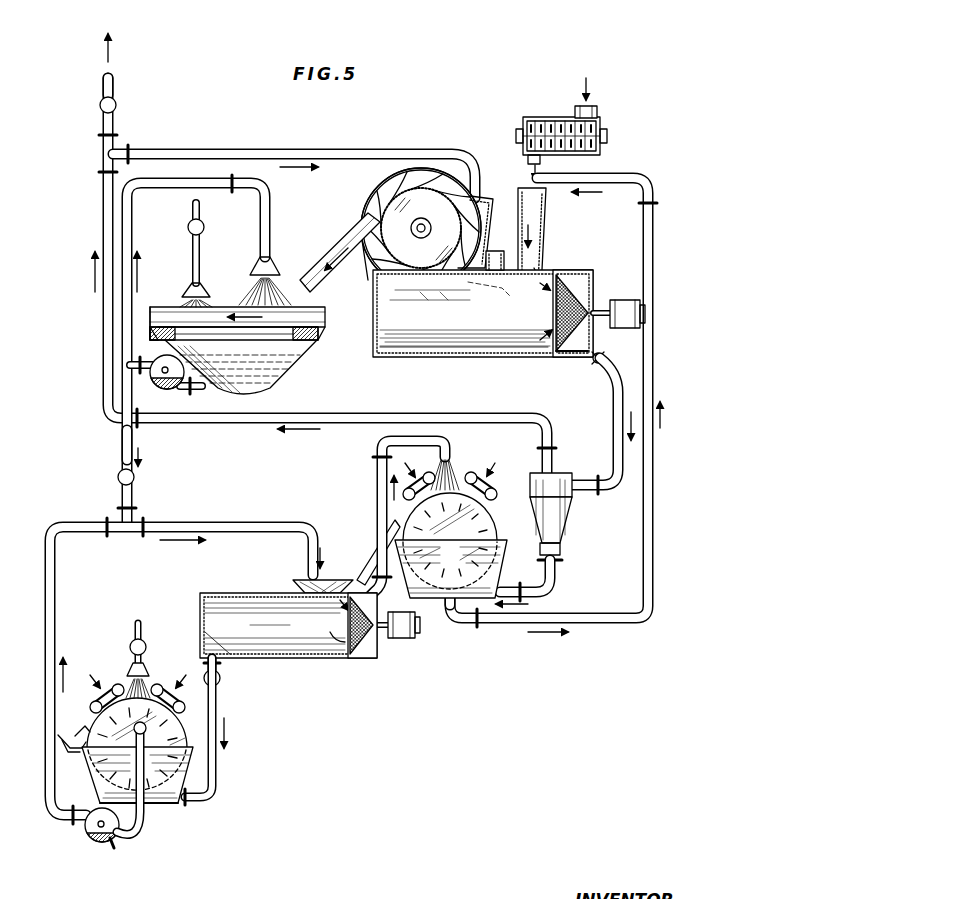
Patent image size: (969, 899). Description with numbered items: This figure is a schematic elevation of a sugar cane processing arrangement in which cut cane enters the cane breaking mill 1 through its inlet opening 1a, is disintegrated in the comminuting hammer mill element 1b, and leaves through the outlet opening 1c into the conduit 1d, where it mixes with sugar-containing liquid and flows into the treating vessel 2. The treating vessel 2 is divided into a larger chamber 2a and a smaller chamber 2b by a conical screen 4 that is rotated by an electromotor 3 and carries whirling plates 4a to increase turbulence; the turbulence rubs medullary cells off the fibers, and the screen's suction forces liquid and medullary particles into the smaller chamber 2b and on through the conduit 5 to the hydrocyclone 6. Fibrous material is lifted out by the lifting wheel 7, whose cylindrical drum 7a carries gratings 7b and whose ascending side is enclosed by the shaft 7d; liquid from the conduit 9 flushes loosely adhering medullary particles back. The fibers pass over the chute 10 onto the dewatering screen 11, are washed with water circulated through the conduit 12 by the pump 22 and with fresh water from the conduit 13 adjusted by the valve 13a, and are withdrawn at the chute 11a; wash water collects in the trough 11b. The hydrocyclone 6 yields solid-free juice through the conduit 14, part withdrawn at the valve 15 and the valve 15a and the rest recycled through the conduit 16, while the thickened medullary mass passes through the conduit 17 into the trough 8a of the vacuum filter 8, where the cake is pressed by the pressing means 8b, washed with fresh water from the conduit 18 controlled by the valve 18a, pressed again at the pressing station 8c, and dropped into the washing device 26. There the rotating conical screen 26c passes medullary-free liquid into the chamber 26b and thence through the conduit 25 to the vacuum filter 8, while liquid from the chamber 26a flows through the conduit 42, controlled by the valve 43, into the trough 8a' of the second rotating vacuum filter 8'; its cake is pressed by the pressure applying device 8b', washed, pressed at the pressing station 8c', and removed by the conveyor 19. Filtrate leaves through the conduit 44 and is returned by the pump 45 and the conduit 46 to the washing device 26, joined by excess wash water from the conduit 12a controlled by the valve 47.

The cane breaking mill 1 is at (548, 115).
The inlet opening 1a is at (598, 108).
The comminuting hammer mill element 1b is at (590, 152).
The outlet opening 1c is at (525, 150).
The conduit 1d is at (543, 225).
The treating vessel 2 is at (370, 336).
The larger chamber 2a is at (418, 350).
The smaller chamber 2b is at (575, 270).
The electromotor 3 is at (626, 300).
The conical screen 4 is at (604, 352).
The whirling plates 4a is at (560, 352).
The conduit 5 is at (612, 420).
The hydrocyclone 6 is at (562, 512).
The lifting wheel 7 is at (365, 208).
The cylindrical drum 7a is at (372, 262).
The gratings 7b is at (405, 172).
The shaft 7d is at (486, 222).
The vacuum filter 8 is at (436, 545).
The trough 8a is at (458, 585).
The pressing means 8b is at (419, 474).
The pressing station 8c is at (481, 471).
The conduit 9 is at (587, 616).
The chute 10 is at (330, 254).
The dewatering screen 11 is at (222, 313).
The chute 11a is at (145, 333).
The trough 11b is at (278, 372).
The conduit 12 is at (133, 290).
The conduit 12a is at (121, 447).
The conduit 13 is at (201, 247).
The valve 13a is at (188, 228).
The conduit 14 is at (488, 414).
The valve 15 is at (115, 85).
The exhaust valve 15a is at (101, 110).
The conduit 16 is at (255, 149).
The conduit 17 is at (468, 585).
The conduit 18 is at (130, 628).
The valve 18a is at (146, 642).
The conveyor 19 is at (64, 752).
The pump 22 is at (175, 390).
The conduit 25 is at (372, 486).
The washing device 26 is at (232, 582).
The chamber 26a is at (285, 650).
The chamber 26b is at (370, 650).
The rotating conical screen 26c is at (345, 650).
The conduit 42 is at (217, 772).
The valve 43 is at (221, 679).
The conduit 44 is at (145, 838).
The pump 45 is at (98, 842).
The conduit 46 is at (46, 594).
The valve 47 is at (117, 478).
The second rotating vacuum filter 8' is at (164, 750).
The trough 8a' is at (155, 819).
The pressure applying device 8b' is at (168, 682).
The pressing station 8c' is at (107, 682).